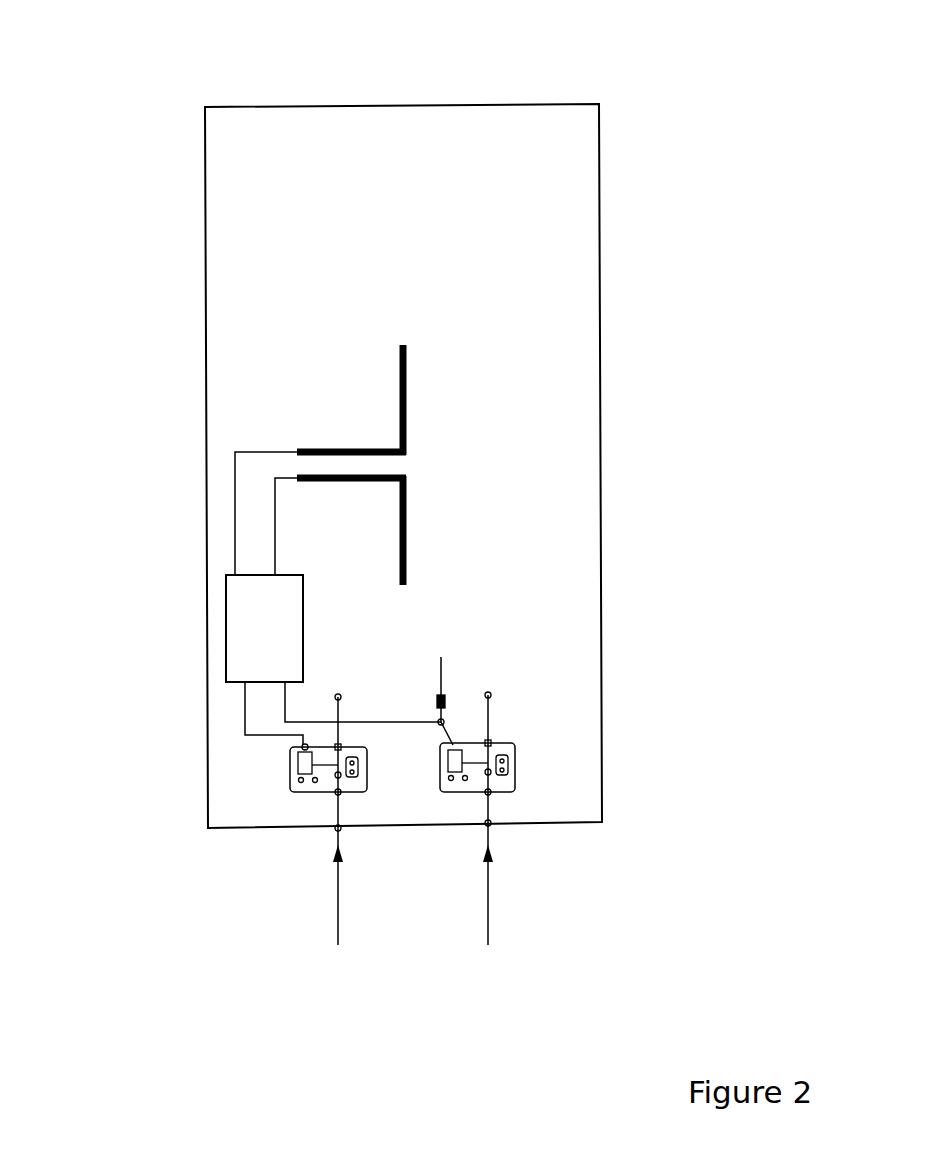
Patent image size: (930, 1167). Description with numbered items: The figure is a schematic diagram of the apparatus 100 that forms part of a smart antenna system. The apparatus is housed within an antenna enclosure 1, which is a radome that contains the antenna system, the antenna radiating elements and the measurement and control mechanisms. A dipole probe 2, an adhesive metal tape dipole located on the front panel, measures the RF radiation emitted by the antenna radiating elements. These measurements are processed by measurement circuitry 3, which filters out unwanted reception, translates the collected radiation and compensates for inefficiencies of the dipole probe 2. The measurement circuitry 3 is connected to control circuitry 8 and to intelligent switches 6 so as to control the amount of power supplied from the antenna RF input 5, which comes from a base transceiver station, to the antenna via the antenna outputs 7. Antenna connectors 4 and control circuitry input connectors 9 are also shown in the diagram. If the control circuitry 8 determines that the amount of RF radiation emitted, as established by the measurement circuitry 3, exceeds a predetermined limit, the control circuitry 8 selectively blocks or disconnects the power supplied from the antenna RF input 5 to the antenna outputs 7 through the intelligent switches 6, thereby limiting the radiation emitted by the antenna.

The apparatus 100 is at (135, 160).
The antenna enclosure 1 is at (601, 381).
The dipole probe 2 is at (410, 577).
The measurement circuitry 3 is at (218, 630).
The antenna connectors 4 is at (346, 835).
The antenna RF input 5 is at (338, 945).
The intelligent switches 6 is at (632, 670).
The antenna outputs 7 is at (486, 692).
The control circuitry 8 is at (318, 738).
The control circuitry input connectors 9 is at (353, 805).